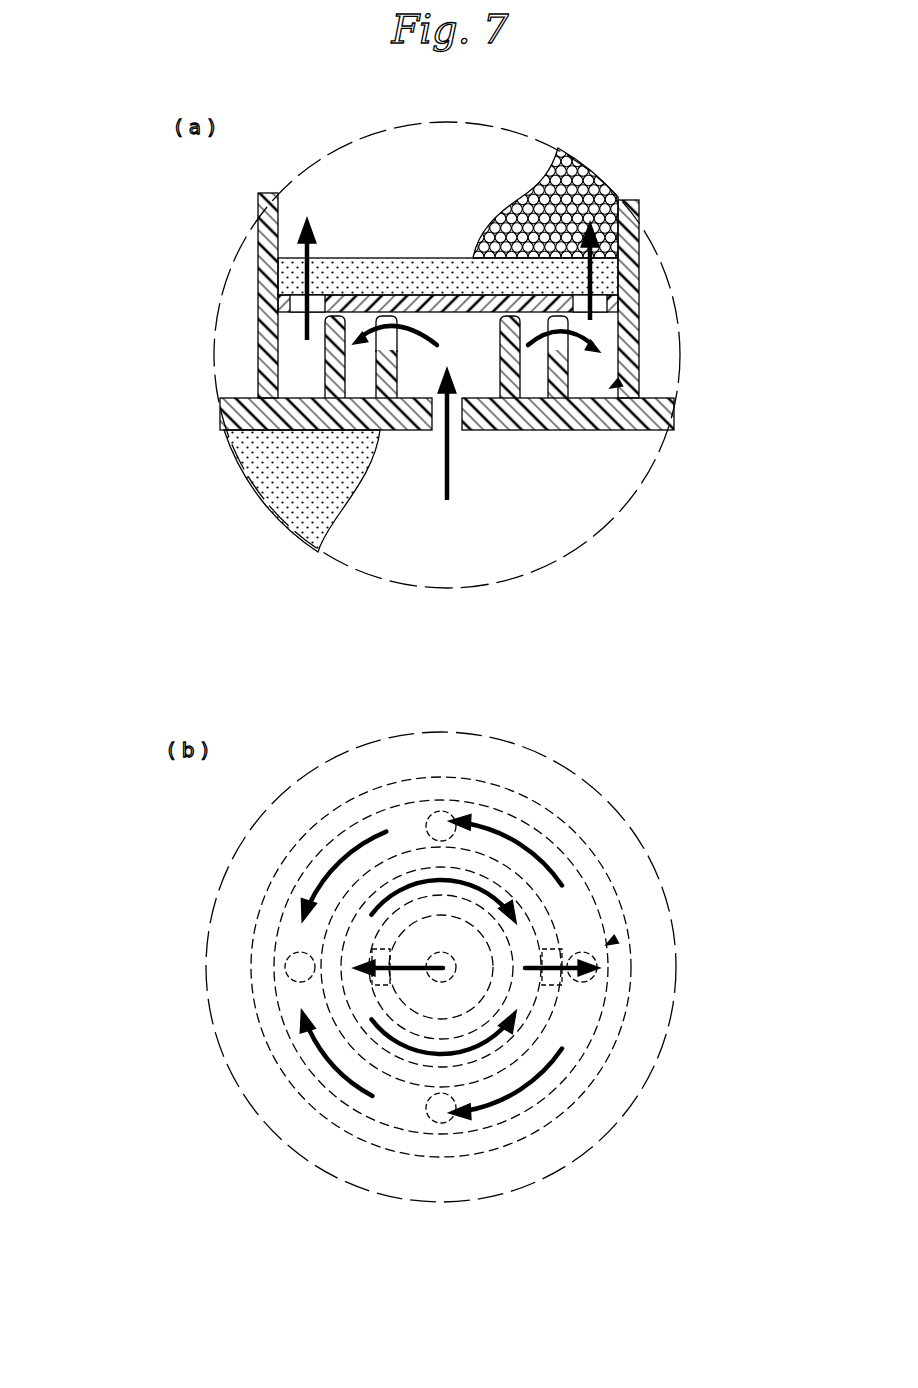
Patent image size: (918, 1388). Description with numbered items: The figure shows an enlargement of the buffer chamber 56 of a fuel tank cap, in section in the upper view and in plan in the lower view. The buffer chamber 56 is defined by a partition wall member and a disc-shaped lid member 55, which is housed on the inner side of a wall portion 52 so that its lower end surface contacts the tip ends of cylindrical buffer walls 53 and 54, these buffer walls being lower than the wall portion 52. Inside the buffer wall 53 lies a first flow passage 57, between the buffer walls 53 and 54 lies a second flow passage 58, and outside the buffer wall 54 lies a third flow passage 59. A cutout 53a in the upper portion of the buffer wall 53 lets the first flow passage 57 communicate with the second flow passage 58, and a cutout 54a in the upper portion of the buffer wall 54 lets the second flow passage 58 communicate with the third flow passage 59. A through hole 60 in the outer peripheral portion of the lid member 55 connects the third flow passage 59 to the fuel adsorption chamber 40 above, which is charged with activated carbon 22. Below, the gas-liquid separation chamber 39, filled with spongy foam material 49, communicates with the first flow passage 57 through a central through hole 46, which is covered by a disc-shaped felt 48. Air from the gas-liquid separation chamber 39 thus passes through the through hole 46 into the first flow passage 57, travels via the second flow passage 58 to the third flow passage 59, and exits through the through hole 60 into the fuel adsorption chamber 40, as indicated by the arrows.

The activated carbon 22 is at (597, 188).
The gas-liquid separation chamber 39 is at (435, 563).
The fuel adsorption chamber 40 is at (436, 151).
The through hole 46 is at (438, 432).
The disc-shaped felt 48 is at (373, 267).
The foam material 49 is at (292, 488).
The wall portion 52 is at (262, 253).
The buffer wall 53 is at (378, 376).
The cutout 53a is at (393, 340).
The buffer wall 54 is at (327, 353).
The cutout 54a is at (560, 328).
The lid member 55 is at (417, 304).
The buffer chamber 56 is at (620, 383).
The first flow passage 57 is at (472, 372).
The second flow passage 58 is at (535, 372).
The third flow passage 59 is at (593, 375).
The through hole 60 is at (313, 303).